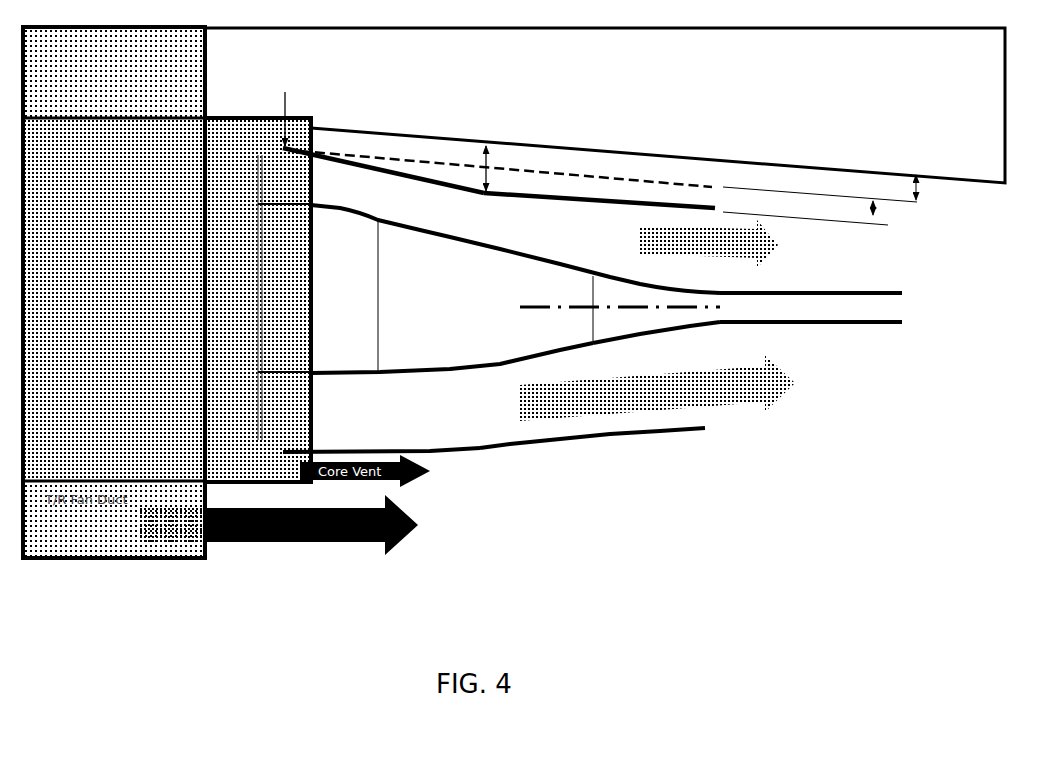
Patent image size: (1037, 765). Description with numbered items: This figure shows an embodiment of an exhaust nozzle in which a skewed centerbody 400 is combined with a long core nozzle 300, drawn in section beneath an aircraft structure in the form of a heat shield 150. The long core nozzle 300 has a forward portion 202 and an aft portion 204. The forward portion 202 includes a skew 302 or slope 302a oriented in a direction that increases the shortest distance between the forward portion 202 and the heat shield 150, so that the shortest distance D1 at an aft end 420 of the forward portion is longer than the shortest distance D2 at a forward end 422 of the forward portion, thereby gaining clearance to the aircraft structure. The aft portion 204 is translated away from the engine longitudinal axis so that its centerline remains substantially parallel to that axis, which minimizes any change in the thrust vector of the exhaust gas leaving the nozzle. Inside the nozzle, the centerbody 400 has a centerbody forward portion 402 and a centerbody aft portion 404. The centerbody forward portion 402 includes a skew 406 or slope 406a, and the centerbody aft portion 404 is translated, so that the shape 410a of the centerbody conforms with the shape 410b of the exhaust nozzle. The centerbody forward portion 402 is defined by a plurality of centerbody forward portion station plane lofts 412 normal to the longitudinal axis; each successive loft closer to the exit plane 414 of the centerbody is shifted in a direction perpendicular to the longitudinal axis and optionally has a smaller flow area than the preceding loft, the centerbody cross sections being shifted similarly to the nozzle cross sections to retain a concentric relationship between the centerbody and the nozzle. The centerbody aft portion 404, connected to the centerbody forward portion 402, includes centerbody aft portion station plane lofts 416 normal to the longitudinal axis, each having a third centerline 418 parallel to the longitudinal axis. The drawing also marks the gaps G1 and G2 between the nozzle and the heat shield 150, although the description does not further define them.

The heat shield 150 is at (605, 105).
The forward portion 202 is at (462, 453).
The aft portion 204 is at (593, 443).
The long core nozzle 300 is at (581, 380).
The skew 302 is at (497, 132).
The slope 302a is at (366, 163).
The centerbody 400 is at (872, 325).
The centerbody forward portion 402 is at (372, 378).
The centerbody aft portion 404 is at (652, 338).
The skew 406 is at (515, 249).
The slope 406a is at (500, 253).
The shape of the centerbody 410a is at (815, 354).
The shape of the exhaust nozzle 410b is at (650, 478).
The centerbody forward portion station plane lofts 412 is at (378, 248).
The exit plane of the centerbody 414 is at (910, 312).
The centerbody aft portion station plane lofts 416 is at (590, 297).
The third centerline 418 is at (589, 305).
The aft end of the forward portion 420 is at (478, 201).
The forward end of the forward portion 422 is at (272, 134).
The shortest distance at the aft end D1 is at (490, 153).
The shortest distance at the forward end D2 is at (287, 99).
The gap G1 is at (925, 190).
The gap G2 is at (882, 210).